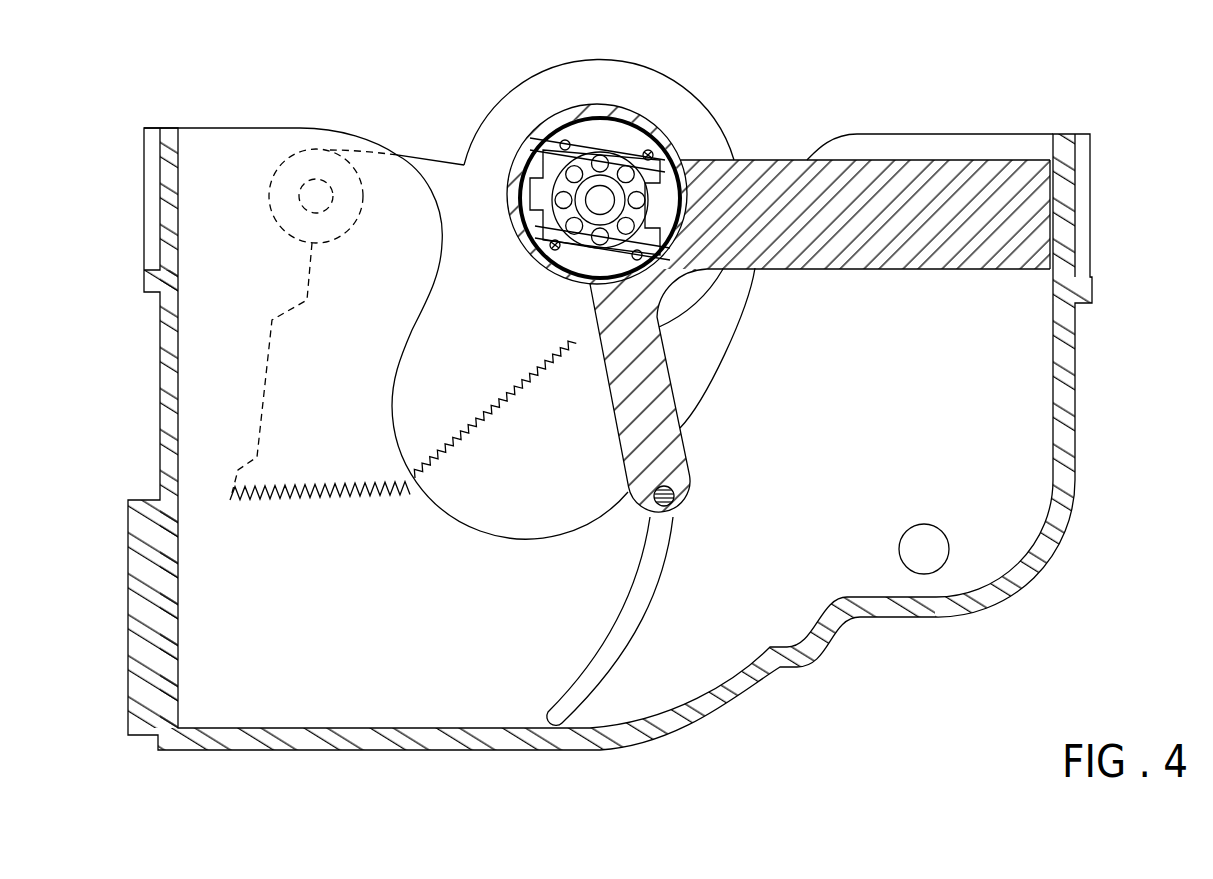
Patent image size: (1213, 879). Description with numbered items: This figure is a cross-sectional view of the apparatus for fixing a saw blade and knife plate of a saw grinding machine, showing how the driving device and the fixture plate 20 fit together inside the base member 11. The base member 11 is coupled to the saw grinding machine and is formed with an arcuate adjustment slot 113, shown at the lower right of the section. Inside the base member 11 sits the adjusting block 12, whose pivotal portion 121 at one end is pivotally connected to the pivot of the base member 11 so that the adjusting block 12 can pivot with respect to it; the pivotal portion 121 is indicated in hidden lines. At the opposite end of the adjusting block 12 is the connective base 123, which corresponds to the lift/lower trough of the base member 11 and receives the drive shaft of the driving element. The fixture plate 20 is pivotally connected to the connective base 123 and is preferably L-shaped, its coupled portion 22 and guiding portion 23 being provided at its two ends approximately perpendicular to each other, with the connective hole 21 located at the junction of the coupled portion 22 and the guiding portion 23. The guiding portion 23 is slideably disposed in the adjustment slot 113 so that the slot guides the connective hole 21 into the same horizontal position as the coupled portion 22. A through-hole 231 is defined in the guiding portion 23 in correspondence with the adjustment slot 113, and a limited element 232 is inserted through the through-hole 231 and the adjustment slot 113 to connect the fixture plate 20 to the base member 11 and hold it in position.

The base member 11 is at (358, 738).
The arcuate adjustment slot 113 is at (605, 667).
The adjusting block 12 is at (443, 190).
The pivotal portion 121 is at (317, 162).
The connective base 123 is at (555, 152).
The fixture plate 20 is at (806, 195).
The connective hole 21 is at (613, 117).
The coupled portion 22 is at (1018, 228).
The guiding portion 23 is at (685, 457).
The through-hole 231 is at (658, 515).
The limited element 232 is at (664, 496).